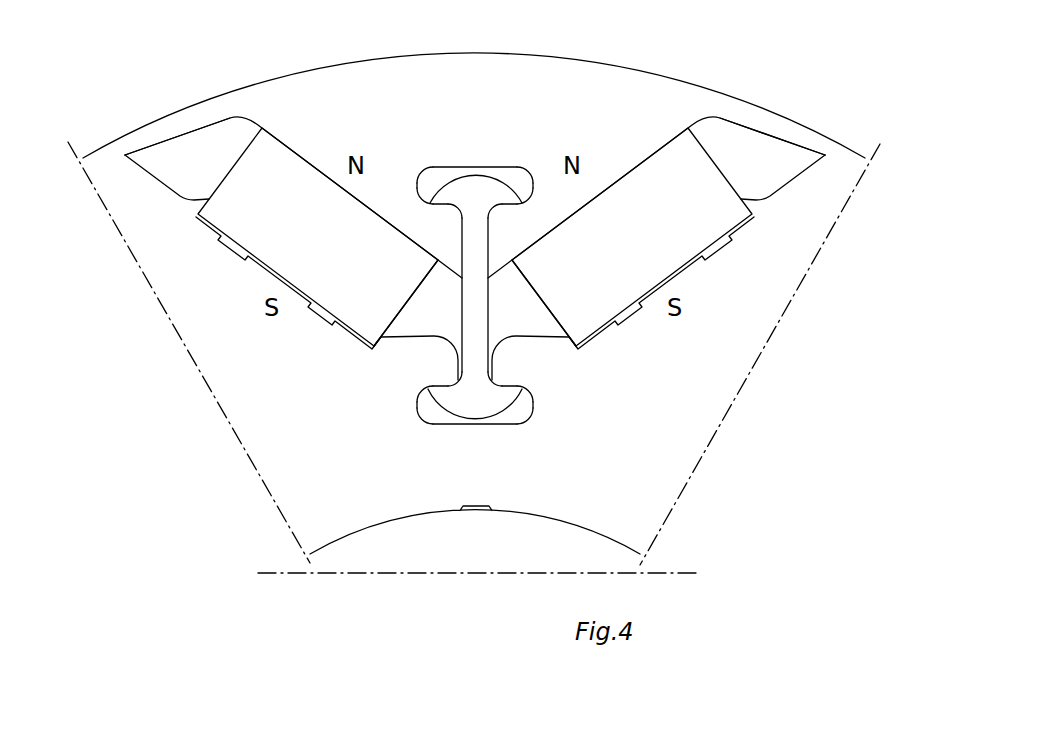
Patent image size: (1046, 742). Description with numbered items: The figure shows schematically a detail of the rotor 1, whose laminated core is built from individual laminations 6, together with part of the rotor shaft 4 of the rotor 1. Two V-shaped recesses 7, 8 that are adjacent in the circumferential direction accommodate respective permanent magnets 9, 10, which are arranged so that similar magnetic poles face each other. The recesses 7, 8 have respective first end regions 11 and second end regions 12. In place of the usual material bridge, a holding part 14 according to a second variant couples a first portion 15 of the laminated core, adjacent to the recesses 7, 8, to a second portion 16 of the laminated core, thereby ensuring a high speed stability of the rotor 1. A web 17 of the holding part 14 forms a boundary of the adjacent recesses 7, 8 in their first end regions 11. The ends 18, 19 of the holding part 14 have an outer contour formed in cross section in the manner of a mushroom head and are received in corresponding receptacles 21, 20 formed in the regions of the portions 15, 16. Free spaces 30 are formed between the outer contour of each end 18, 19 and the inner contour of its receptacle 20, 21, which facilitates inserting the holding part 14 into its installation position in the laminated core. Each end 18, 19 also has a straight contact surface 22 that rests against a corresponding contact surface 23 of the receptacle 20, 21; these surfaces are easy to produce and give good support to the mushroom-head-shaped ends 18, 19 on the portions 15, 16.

The rotor 1 is at (118, 107).
The rotor shaft 4 is at (380, 548).
The individual lamination 6 is at (175, 277).
The recess 7 is at (750, 155).
The recess 8 is at (228, 125).
The permanent magnet 9 is at (670, 157).
The permanent magnet 10 is at (287, 168).
The first end region 11 is at (398, 313).
The second end region 12 is at (187, 143).
The holding part 14 is at (480, 188).
The first portion 15 is at (488, 97).
The second portion 16 is at (539, 384).
The web 17 is at (470, 313).
The end 18 is at (457, 185).
The end 19 is at (472, 408).
The receptacle 20 is at (420, 404).
The receptacle 21 is at (427, 172).
The straight contact surface 22 is at (442, 207).
The corresponding contact surface 23 is at (502, 396).
The free space 30 is at (420, 182).